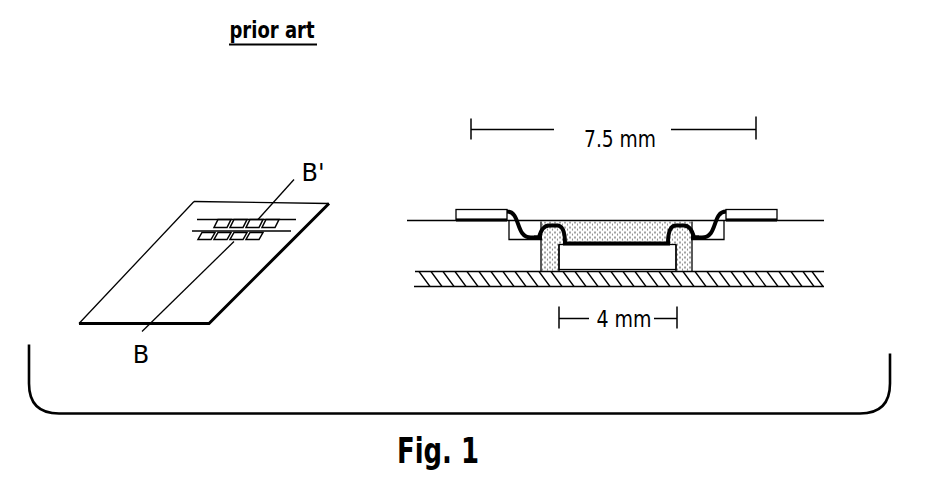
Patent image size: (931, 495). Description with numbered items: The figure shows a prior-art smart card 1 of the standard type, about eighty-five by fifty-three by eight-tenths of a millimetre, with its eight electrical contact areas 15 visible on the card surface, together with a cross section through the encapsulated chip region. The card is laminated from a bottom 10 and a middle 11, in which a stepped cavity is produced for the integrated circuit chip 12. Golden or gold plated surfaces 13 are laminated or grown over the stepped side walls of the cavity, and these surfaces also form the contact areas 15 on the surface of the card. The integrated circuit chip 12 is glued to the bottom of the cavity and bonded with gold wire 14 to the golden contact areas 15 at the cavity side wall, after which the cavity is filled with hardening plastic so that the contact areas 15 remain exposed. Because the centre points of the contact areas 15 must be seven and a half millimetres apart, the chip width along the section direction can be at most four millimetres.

The smart card 1 is at (203, 217).
The contact areas 15 is at (228, 170).
The bottom 10 is at (522, 275).
The middle 11 is at (452, 260).
The integrated circuit chip 12 is at (610, 255).
The golden or gold plated surfaces 13 is at (503, 213).
The gold wire 14 is at (558, 220).